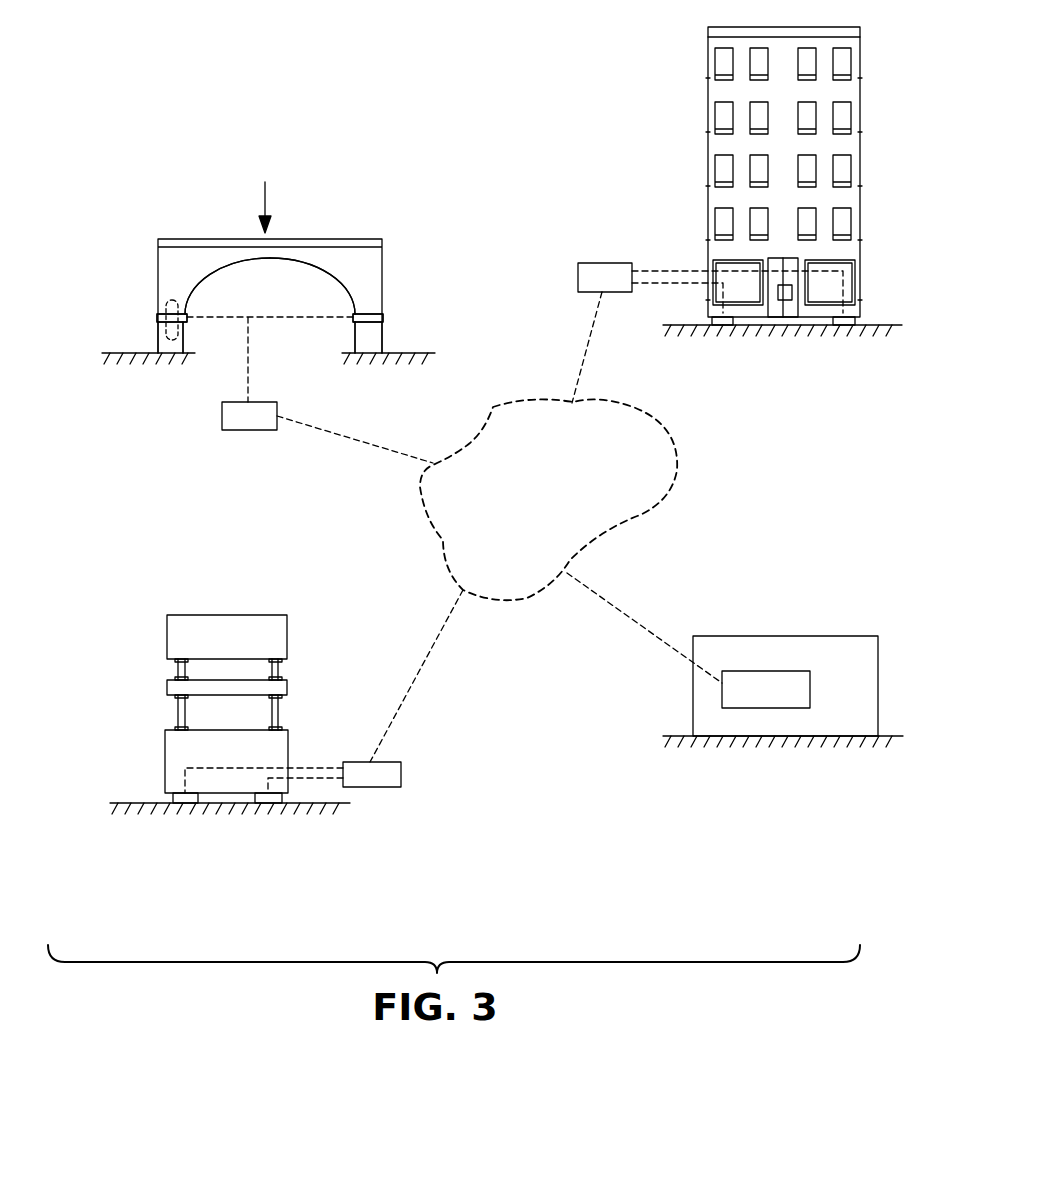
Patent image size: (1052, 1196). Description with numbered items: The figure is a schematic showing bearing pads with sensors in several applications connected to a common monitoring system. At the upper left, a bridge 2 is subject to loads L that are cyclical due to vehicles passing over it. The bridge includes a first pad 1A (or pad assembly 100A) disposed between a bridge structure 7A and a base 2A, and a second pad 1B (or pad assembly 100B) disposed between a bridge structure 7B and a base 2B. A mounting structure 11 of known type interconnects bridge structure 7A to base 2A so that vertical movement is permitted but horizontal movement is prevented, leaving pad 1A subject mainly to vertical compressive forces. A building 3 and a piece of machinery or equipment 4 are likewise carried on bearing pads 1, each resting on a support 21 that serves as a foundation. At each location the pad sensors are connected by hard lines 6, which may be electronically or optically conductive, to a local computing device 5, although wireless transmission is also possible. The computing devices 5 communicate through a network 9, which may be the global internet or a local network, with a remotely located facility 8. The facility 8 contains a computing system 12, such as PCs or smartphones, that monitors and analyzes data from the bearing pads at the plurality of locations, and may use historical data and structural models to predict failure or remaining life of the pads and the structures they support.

The bearing pad 1 is at (735, 327).
The first pad 1A is at (172, 318).
The second pad 1B is at (368, 318).
The first pad assembly 100A is at (155, 317).
The second pad assembly 100B is at (385, 318).
The bridge 2 is at (382, 263).
The base 2A is at (160, 340).
The base 2B is at (383, 336).
The building 3 is at (862, 112).
The machinery/equipment 4 is at (289, 632).
The computing device 5 is at (237, 431).
The lines 6 is at (257, 327).
The bridge structure 7A is at (172, 294).
The bridge structure 7B is at (370, 295).
The facility 8 is at (775, 636).
The network 9 is at (640, 483).
The mounting structure 11 is at (147, 292).
The computing system 12 is at (810, 683).
The support 21 is at (410, 353).
The loads L is at (268, 203).